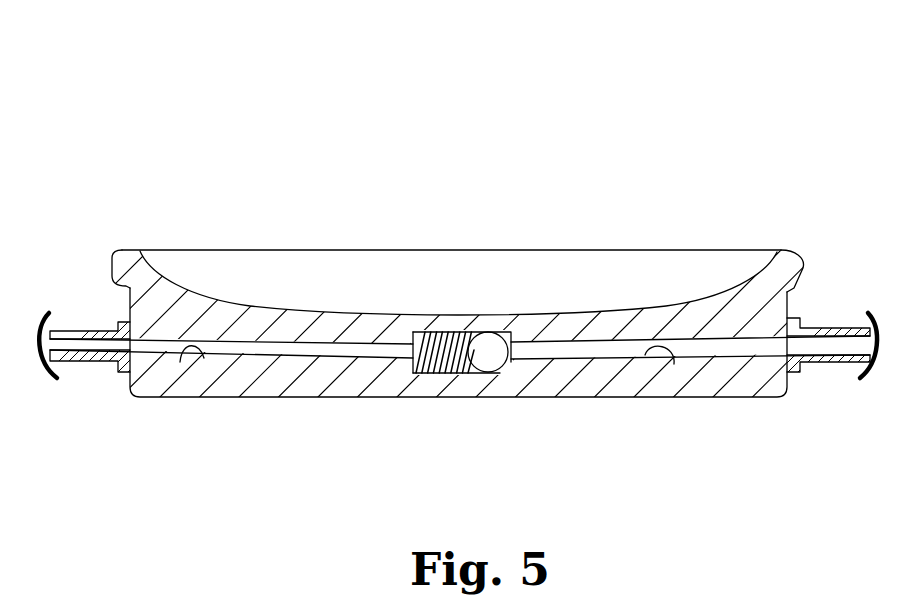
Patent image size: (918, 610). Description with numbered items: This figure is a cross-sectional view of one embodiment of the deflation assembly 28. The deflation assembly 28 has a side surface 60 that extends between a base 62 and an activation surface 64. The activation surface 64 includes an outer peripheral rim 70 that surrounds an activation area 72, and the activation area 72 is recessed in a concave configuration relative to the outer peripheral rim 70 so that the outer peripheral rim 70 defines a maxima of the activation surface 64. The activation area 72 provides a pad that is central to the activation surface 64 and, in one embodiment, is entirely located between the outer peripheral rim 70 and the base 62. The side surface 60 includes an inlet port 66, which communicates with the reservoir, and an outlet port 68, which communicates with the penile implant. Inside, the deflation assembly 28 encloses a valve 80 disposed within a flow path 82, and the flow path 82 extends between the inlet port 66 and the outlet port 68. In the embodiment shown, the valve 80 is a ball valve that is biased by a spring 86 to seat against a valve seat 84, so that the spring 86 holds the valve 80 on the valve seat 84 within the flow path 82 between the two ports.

The deflation assembly 28 is at (153, 113).
The side surface 60 is at (127, 297).
The base 62 is at (267, 398).
The activation surface 64 is at (610, 275).
The inlet port 66 is at (840, 364).
The outlet port 68 is at (75, 362).
The outer peripheral rim 70 is at (655, 250).
The activation area 72 is at (574, 312).
The valve 80 is at (490, 355).
The flow path 82 is at (180, 362).
The valve seat 84 is at (513, 326).
The spring 86 is at (428, 326).